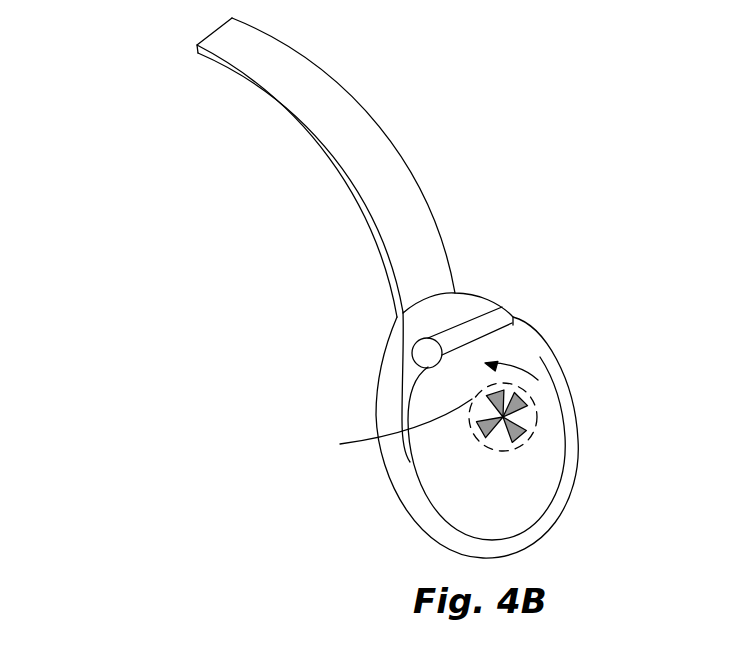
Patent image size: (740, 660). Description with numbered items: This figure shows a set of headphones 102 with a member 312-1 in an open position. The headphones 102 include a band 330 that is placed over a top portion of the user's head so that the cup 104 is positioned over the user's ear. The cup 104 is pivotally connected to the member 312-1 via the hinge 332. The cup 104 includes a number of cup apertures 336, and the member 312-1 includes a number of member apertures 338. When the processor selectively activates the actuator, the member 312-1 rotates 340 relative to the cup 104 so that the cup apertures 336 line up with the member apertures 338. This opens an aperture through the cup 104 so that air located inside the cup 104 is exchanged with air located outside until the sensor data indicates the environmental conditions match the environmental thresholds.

The headphones 102 is at (130, 88).
The band 330 is at (343, 155).
The hinge 332 is at (425, 338).
The cup 104 is at (385, 372).
The rotation of the member 340 is at (511, 362).
The cup apertures 336 is at (390, 427).
The member apertures 338 is at (538, 403).
The member 312-1 is at (543, 422).